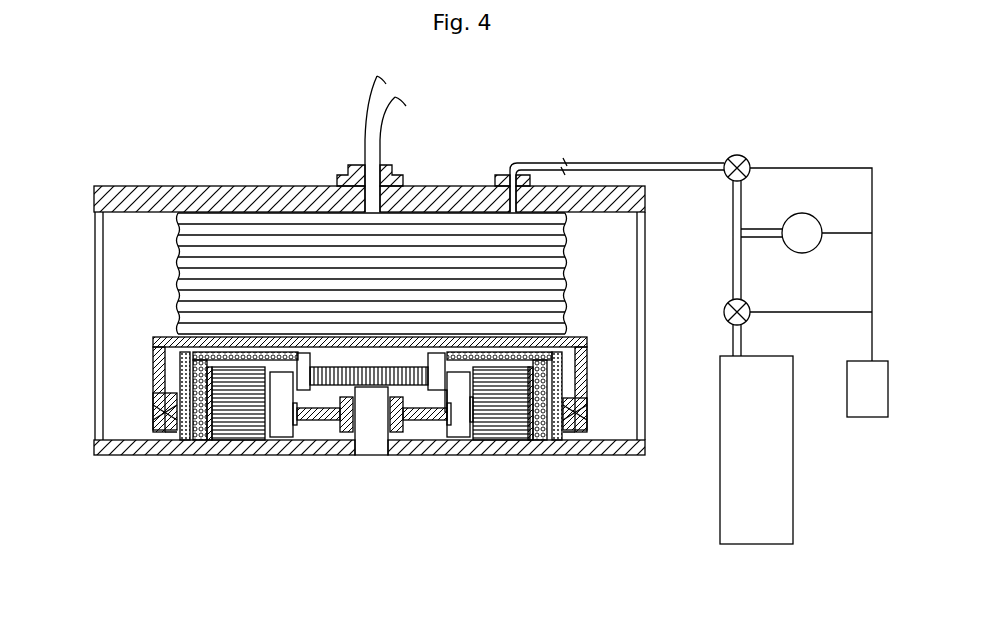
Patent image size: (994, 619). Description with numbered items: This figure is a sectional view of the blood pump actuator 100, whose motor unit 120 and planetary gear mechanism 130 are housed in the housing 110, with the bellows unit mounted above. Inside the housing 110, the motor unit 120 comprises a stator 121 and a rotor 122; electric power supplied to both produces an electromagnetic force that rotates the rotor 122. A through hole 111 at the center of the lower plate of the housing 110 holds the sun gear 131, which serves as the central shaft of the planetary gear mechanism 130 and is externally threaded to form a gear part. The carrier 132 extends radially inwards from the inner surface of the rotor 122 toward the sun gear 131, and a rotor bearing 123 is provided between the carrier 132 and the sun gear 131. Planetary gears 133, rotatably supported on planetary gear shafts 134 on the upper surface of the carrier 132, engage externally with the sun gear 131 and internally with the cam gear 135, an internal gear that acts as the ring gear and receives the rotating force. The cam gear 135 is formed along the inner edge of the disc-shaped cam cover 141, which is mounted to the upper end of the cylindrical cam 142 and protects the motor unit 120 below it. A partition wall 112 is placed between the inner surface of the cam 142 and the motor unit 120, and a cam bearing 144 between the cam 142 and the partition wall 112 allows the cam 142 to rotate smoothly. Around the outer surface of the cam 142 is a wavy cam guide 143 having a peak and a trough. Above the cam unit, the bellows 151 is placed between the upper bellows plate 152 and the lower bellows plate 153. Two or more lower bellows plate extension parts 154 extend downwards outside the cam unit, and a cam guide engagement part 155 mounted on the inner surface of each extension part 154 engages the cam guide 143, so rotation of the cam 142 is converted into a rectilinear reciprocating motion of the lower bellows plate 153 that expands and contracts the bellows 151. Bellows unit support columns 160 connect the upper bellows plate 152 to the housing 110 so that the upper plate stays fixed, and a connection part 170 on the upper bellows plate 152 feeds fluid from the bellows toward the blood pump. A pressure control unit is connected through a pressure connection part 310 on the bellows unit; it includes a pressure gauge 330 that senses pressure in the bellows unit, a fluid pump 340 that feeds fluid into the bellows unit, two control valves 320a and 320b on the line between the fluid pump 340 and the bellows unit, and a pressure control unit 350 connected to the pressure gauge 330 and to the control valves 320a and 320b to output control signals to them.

The blood pump actuator 100 is at (150, 128).
The housing 110 is at (95, 452).
The through hole 111 is at (358, 457).
The partition wall 112 is at (225, 445).
The motor unit 120 is at (370, 540).
The stator 121 is at (260, 455).
The rotor 122 is at (292, 455).
The rotor bearing 123 is at (330, 455).
The planetary gear mechanism 130 is at (505, 540).
The sun gear 131 is at (388, 457).
The carrier 132 is at (415, 457).
The planetary gears 133 is at (462, 457).
The planetary gear shafts 134 is at (438, 457).
The cam gear (ring gear) 135 is at (485, 457).
The cam cover 141 is at (175, 325).
The cam 142 is at (195, 438).
The cam guide 143 is at (183, 445).
The cam bearing 144 is at (207, 445).
The bellows 151 is at (178, 255).
The upper bellows plate 152 is at (199, 192).
The lower bellows plate 153 is at (152, 335).
The lower bellows plate extension part 154 is at (152, 362).
The cam guide engagement part 155 is at (152, 395).
The bellows unit support columns 160 is at (97, 420).
The connection part 170 is at (356, 160).
The pressure connection part 310 is at (502, 175).
The control valve 320a is at (740, 155).
The control valve 320b is at (748, 318).
The pressure gauge 330 is at (800, 254).
The fluid pump 340 is at (755, 545).
The pressure control unit 350 is at (868, 418).